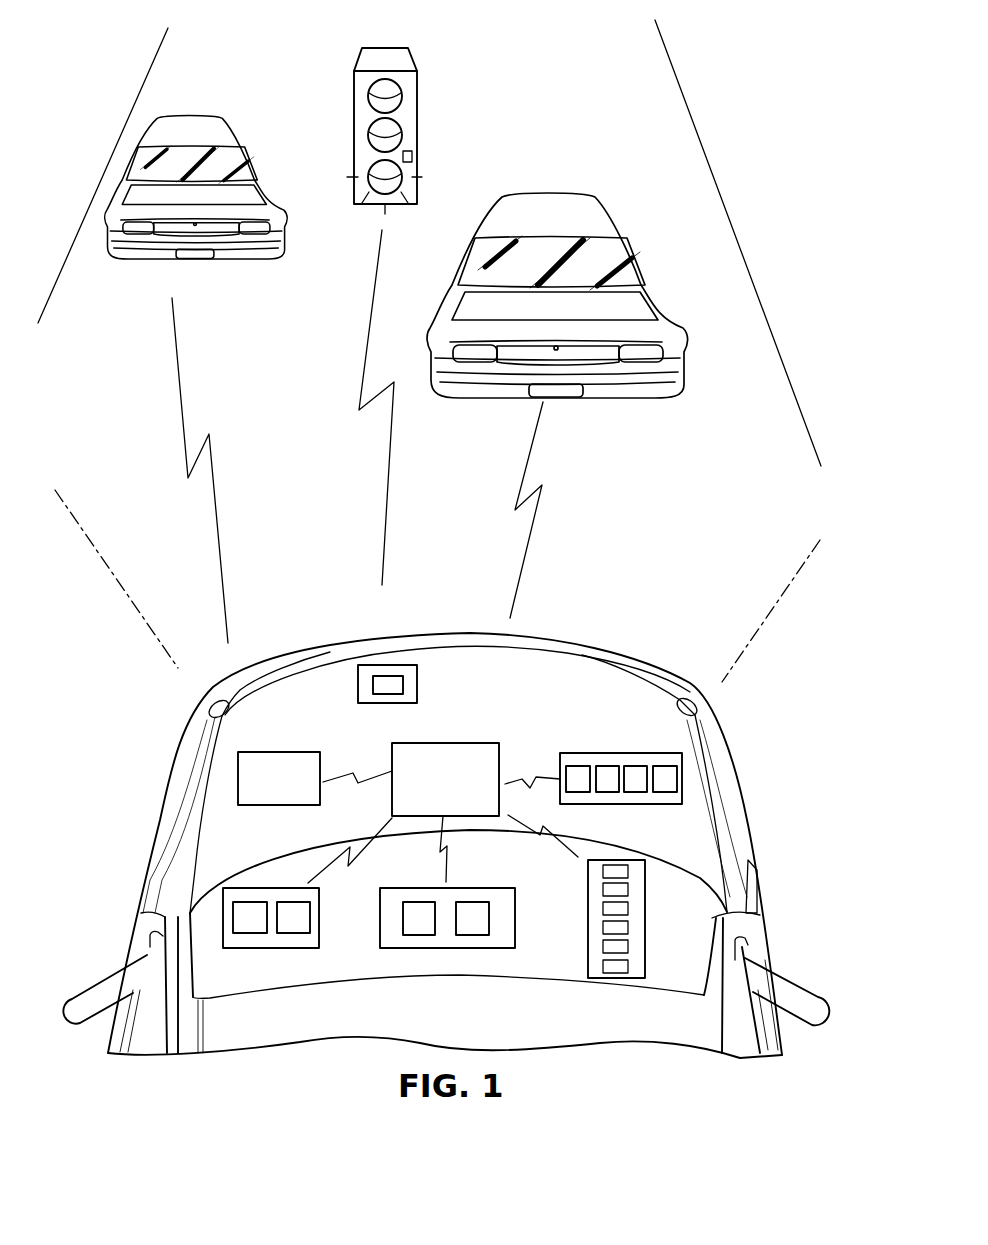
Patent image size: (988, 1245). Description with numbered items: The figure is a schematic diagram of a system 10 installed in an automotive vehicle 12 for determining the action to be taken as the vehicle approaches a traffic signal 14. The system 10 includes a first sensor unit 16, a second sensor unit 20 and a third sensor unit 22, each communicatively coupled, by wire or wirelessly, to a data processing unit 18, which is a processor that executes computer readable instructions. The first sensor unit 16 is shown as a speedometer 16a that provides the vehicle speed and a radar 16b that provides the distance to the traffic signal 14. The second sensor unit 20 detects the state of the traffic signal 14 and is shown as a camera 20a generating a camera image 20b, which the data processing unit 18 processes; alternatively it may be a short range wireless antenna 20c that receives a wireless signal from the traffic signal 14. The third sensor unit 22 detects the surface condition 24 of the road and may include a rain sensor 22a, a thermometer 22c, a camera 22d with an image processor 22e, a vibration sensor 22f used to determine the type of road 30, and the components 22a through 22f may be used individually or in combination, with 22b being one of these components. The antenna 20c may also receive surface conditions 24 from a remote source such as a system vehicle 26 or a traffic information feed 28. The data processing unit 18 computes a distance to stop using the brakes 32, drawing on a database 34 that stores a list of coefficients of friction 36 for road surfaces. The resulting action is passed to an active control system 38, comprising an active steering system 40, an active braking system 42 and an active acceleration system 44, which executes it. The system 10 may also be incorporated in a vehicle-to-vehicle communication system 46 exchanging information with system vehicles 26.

The system 10 is at (778, 650).
The automotive vehicle 12 is at (782, 890).
The traffic signal 14 is at (401, 130).
The first sensor unit 16 is at (267, 913).
The speedometer 16a is at (240, 935).
The radar 16b is at (290, 935).
The data processing unit 18 is at (467, 743).
The second sensor unit 20 is at (437, 948).
The camera 20a is at (417, 935).
The camera image 20b is at (354, 113).
The short range wireless antenna 20c is at (479, 935).
The third sensor unit 22 is at (644, 897).
The rain sensor 22a is at (628, 871).
The vehicle system b 22b is at (628, 890).
The thermometer 22c is at (628, 908).
The camera 22d is at (628, 927).
The image processor 22e is at (628, 946).
The vibration sensor 22f is at (628, 966).
The surface condition 24 is at (264, 510).
The system vehicle 26 is at (585, 205).
The traffic information feed 28 is at (413, 155).
The type of road 30 is at (324, 540).
The brakes 32 is at (273, 752).
The database 34 is at (386, 650).
The coefficient of frictions 36 is at (380, 676).
The active control system 38 is at (668, 723).
The active steering system 40 is at (578, 766).
The active braking system 42 is at (609, 766).
The active acceleration system 44 is at (640, 766).
The vehicle-to-vehicle communication system 46 is at (683, 779).